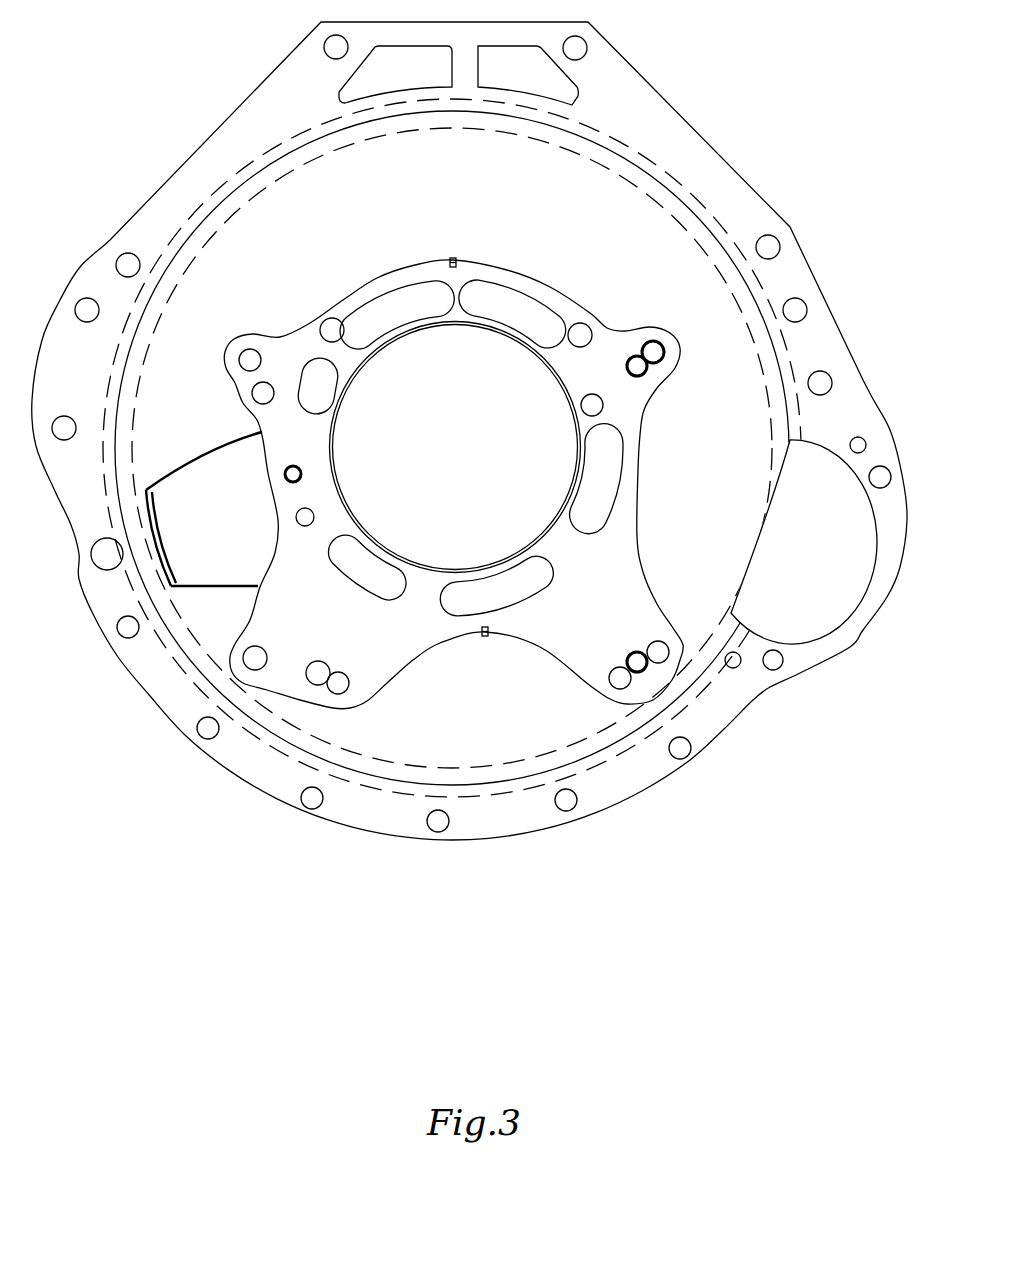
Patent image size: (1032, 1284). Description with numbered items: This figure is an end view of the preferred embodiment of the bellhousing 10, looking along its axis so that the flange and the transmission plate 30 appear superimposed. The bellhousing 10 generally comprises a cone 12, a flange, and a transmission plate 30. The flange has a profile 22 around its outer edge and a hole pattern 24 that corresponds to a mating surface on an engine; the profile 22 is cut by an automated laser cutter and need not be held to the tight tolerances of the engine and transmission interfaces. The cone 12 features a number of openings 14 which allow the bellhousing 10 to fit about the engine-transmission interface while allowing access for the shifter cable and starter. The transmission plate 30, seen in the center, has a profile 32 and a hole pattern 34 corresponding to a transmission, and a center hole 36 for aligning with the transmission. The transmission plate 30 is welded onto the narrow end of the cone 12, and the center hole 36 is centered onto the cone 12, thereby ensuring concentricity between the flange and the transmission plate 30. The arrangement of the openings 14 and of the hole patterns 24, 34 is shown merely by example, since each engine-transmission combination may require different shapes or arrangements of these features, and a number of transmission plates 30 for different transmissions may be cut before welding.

The bellhousing 10 is at (202, 112).
The cone 12 is at (263, 227).
The openings 14 is at (825, 608).
The profile of the flange 22 is at (693, 127).
The hole pattern 24 is at (577, 47).
The transmission plate 30 is at (443, 483).
The profile 32 is at (377, 278).
The hole pattern 34 is at (252, 368).
The center hole 36 is at (507, 452).